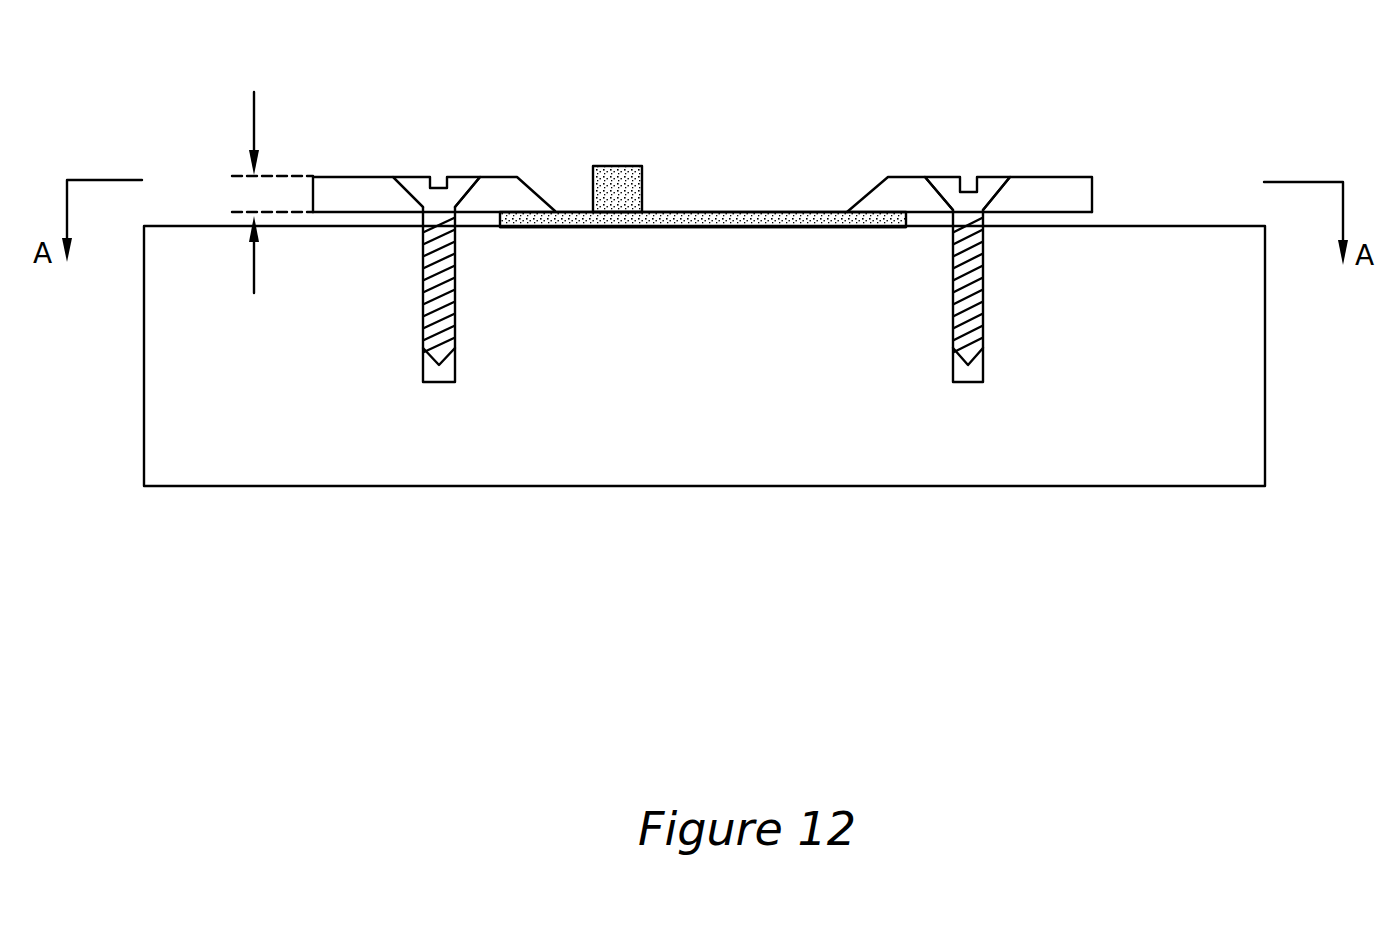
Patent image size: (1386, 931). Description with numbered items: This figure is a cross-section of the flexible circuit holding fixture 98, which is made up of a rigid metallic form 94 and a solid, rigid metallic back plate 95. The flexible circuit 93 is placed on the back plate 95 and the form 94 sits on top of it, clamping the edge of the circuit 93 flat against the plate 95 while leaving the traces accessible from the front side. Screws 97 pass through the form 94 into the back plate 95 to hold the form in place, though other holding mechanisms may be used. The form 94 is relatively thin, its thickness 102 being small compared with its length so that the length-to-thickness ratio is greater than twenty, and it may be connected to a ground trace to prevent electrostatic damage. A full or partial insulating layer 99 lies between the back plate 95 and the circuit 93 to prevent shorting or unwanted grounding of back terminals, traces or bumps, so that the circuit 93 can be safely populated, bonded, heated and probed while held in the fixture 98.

The flexible circuit 93 is at (717, 212).
The rigid metallic form 94 is at (350, 177).
The back plate 95 is at (190, 225).
The screws 97 is at (463, 177).
The fixture 98 is at (893, 103).
The insulating layer 99 is at (783, 228).
The thickness 102 is at (253, 110).